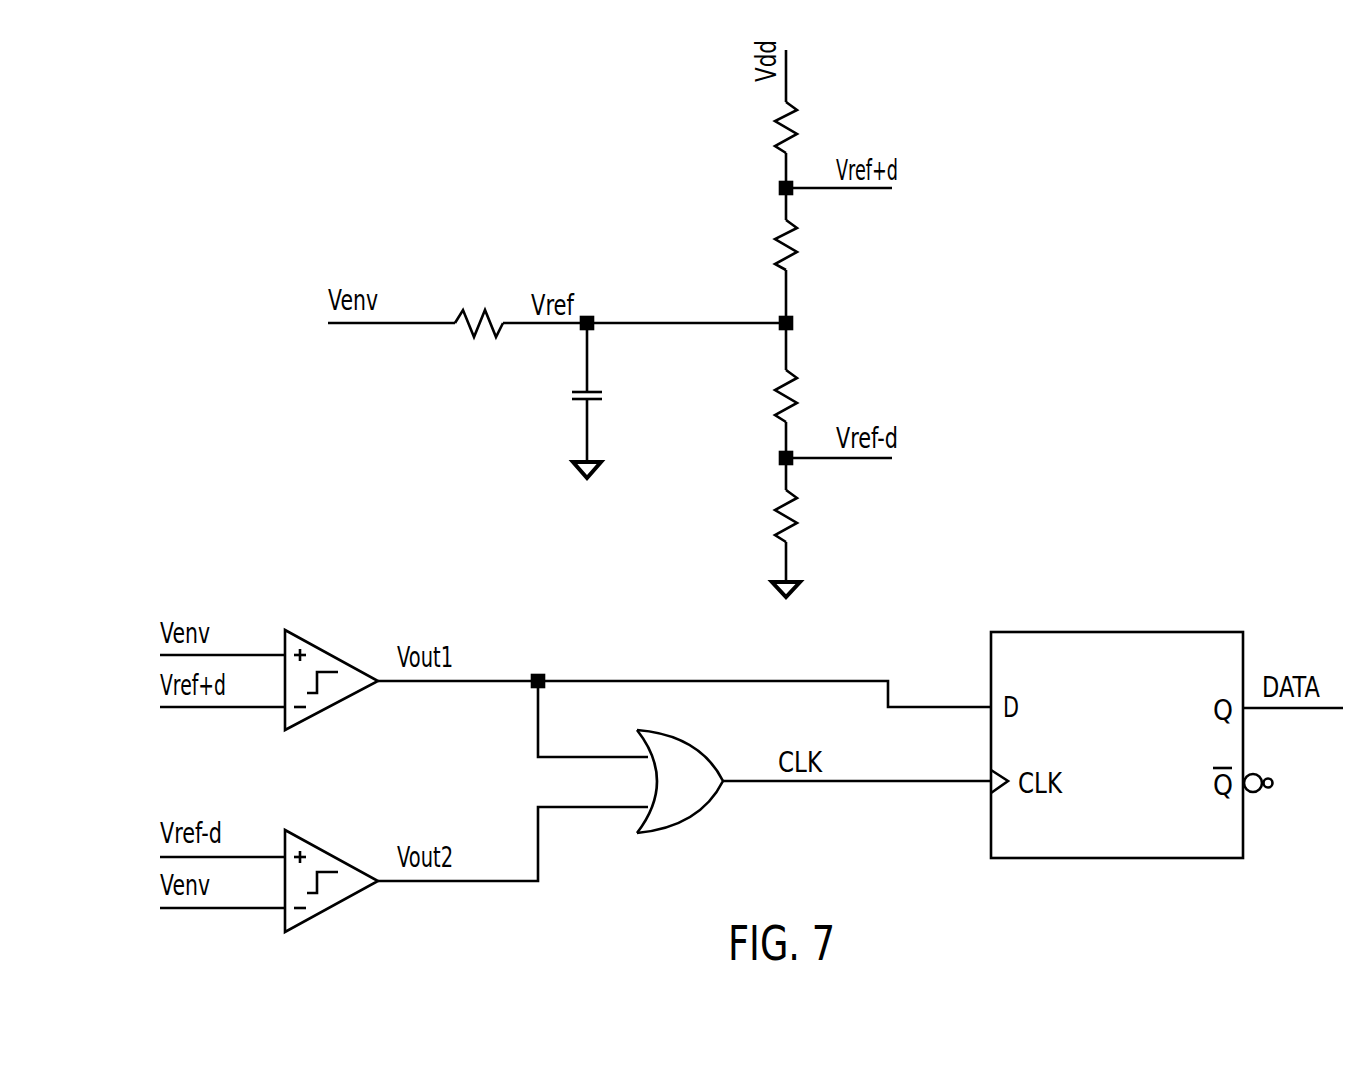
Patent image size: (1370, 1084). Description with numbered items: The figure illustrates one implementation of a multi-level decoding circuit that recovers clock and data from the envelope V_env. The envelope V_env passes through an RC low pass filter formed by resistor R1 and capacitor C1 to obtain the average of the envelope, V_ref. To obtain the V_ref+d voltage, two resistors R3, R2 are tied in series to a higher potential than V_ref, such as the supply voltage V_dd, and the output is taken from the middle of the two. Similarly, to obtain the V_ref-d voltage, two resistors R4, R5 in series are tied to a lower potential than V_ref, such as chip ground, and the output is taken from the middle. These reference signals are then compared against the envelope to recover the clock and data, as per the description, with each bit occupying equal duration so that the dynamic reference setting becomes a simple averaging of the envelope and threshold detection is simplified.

The resistor R1 is at (479, 326).
The resistor R2 is at (803, 246).
The resistor R3 is at (803, 126).
The resistor R4 is at (803, 396).
The resistor R5 is at (803, 515).
The capacitor C1 is at (597, 400).